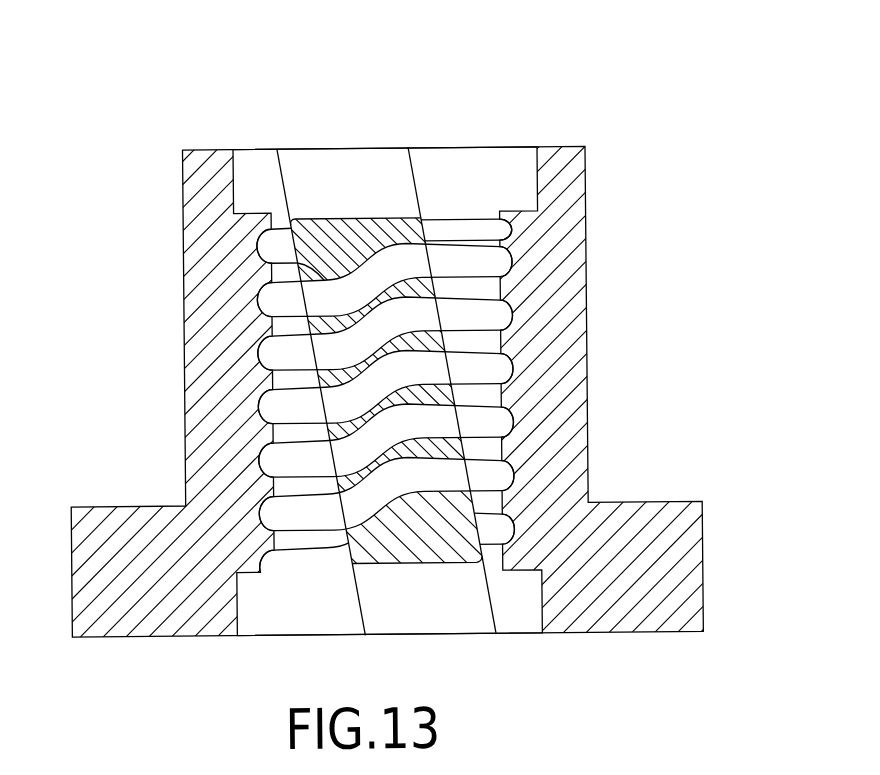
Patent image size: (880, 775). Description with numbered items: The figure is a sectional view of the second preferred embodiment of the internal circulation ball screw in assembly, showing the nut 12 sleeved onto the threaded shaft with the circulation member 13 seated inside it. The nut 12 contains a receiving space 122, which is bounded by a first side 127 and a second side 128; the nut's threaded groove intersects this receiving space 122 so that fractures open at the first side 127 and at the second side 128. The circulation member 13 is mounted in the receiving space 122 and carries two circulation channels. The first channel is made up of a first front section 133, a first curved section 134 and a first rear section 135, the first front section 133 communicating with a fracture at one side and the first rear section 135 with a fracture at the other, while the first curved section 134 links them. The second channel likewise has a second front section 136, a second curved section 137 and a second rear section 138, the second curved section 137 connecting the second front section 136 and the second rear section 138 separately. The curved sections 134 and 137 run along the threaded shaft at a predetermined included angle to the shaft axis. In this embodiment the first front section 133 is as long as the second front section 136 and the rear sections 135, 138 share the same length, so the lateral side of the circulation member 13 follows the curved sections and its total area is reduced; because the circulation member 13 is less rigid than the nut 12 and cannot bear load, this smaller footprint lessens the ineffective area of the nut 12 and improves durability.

The nut 12 is at (573, 150).
The circulation member 13 is at (405, 214).
The receiving space 122 is at (421, 221).
The first side 127 is at (288, 184).
The second side 128 is at (407, 178).
The first front section 133 is at (319, 288).
The first curved section 134 is at (323, 232).
The first rear section 135 is at (382, 232).
The second front section 136 is at (325, 341).
The second curved section 137 is at (371, 232).
The second rear section 138 is at (447, 279).